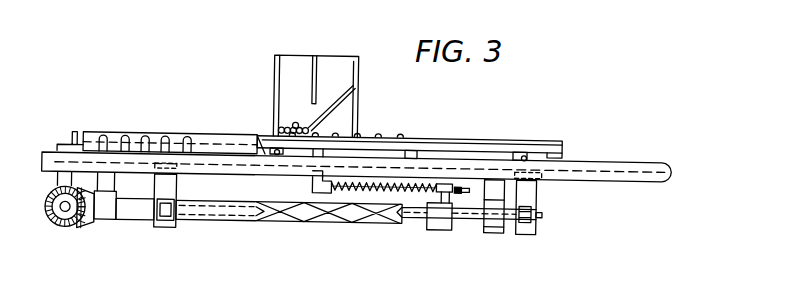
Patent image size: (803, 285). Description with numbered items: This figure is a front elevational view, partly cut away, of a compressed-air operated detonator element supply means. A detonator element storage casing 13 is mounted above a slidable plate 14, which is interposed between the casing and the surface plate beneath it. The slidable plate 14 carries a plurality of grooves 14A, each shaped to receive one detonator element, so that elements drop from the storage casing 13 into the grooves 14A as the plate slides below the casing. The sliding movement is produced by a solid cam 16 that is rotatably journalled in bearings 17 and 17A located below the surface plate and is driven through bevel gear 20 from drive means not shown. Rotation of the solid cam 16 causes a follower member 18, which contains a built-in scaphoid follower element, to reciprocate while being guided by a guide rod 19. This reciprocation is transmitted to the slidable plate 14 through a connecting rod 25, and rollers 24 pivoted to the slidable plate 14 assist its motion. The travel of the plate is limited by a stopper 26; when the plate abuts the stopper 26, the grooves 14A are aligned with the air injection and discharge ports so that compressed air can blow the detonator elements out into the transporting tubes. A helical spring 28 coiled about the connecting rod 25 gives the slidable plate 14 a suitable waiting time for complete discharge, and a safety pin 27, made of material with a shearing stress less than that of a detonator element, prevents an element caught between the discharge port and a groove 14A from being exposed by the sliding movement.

The detonator element storage casing 13 is at (356, 113).
The slidable plate 14 is at (448, 148).
The grooves 14A is at (385, 142).
The solid cam 16 is at (273, 215).
The bearing 17 is at (107, 213).
The bearing 17A is at (496, 234).
The follower member 18 is at (447, 224).
The guide rod 19 is at (415, 221).
The bevel gear 20 is at (67, 227).
The rollers 24 is at (273, 140).
The connecting rod 25 is at (347, 195).
The stopper 26 is at (72, 131).
The safety pin 27 is at (458, 187).
The helical spring 28 is at (368, 195).